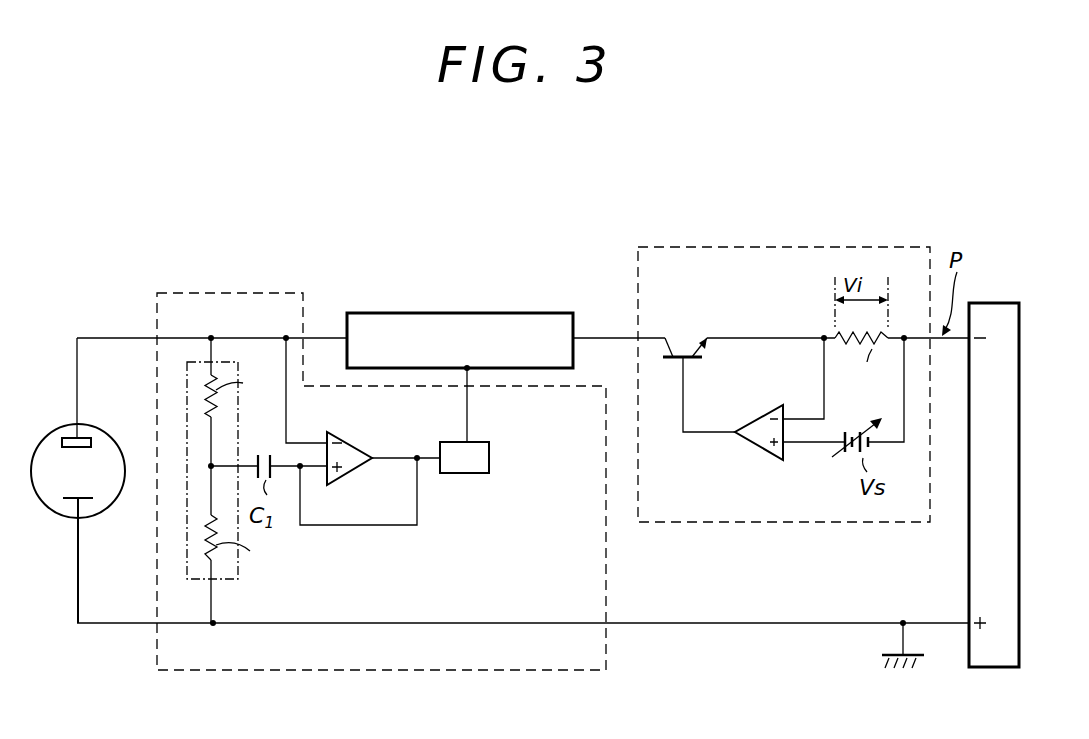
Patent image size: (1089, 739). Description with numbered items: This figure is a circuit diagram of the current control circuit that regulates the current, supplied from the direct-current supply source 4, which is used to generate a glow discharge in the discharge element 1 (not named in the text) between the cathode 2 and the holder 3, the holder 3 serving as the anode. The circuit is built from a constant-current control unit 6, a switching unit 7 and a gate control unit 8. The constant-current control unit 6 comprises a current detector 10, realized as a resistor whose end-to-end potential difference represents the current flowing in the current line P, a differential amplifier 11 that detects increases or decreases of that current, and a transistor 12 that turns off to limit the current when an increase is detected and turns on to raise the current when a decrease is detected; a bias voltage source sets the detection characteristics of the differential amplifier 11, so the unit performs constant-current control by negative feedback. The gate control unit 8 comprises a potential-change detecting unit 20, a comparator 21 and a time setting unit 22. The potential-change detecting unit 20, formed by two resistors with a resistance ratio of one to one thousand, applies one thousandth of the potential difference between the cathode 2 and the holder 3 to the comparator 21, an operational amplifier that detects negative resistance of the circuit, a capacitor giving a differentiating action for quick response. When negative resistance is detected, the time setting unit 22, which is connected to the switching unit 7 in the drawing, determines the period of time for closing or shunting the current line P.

The flash lamp 1 is at (97, 517).
The cathode 2 is at (85, 437).
The holder 3 is at (98, 493).
The direct-current supply source 4 is at (1005, 303).
The constant-current control unit 6 is at (660, 244).
The switching unit 7 is at (467, 313).
The gate control unit 8 is at (200, 671).
The current detector 10 is at (848, 357).
The differential amplifier 11 is at (760, 452).
The transistor 12 is at (693, 360).
The potential-change detecting unit 20 is at (238, 579).
The comparator 21 is at (338, 437).
The time setting unit 22 is at (480, 473).